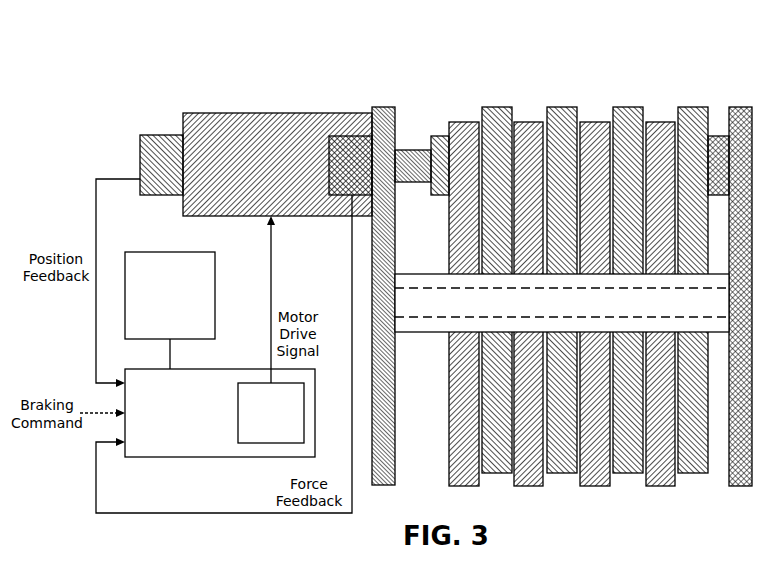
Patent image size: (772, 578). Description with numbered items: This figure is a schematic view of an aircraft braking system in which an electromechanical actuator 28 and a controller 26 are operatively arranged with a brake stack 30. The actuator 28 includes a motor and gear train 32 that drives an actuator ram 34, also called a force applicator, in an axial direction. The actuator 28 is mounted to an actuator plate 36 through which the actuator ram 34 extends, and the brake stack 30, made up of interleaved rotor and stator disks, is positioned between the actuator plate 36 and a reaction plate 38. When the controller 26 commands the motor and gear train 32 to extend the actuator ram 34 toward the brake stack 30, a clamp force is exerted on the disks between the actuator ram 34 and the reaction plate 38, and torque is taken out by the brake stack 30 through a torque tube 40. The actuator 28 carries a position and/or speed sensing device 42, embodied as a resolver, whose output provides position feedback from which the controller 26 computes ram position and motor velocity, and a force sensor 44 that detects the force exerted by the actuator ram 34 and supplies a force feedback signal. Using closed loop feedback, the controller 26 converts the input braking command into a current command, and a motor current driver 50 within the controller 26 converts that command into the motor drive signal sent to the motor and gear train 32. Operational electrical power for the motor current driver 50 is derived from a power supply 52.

The actuator 28 is at (238, 44).
The motor and gear train 32 is at (218, 113).
The position and/or speed sensing device 42 is at (140, 163).
The force sensor 44 is at (343, 136).
The actuator plate 36 is at (386, 107).
The actuator ram 34 is at (420, 150).
The brake stack 30 is at (588, 80).
The reaction plate 38 is at (742, 107).
The torque tube 40 is at (407, 333).
The power supply 52 is at (215, 293).
The motor current driver 50 is at (238, 410).
The controller 26 is at (170, 457).